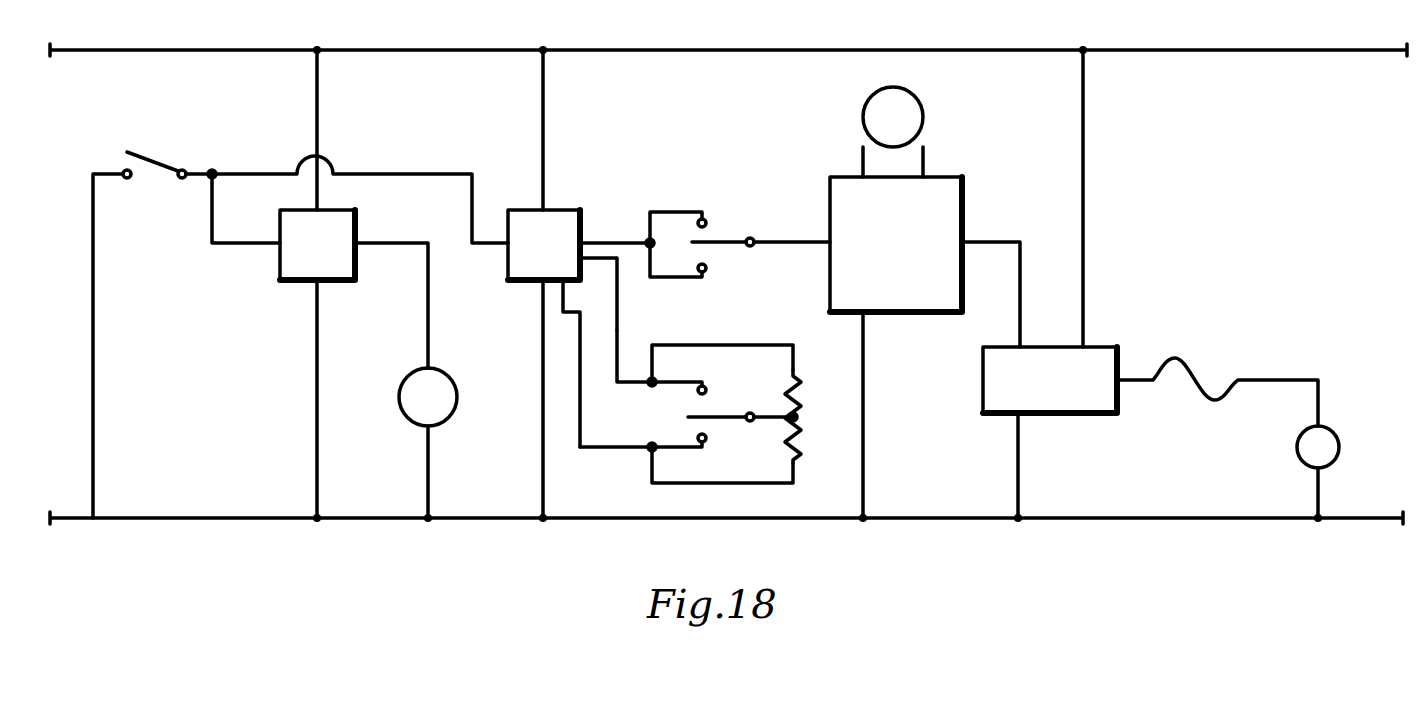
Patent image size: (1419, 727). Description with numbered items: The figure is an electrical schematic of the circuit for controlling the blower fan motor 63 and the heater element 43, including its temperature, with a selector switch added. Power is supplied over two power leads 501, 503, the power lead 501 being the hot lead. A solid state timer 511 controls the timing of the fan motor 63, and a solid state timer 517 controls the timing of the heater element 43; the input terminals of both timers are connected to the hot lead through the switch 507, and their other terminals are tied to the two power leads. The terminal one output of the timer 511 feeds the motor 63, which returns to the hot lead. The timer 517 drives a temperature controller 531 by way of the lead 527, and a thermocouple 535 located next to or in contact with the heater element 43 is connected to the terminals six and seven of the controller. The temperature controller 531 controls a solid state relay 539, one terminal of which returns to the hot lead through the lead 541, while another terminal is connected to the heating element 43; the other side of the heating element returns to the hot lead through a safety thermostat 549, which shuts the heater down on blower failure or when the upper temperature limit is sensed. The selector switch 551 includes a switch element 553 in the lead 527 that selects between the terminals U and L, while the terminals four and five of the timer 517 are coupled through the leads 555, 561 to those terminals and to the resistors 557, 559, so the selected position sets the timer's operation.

The power lead 503 is at (407, 50).
The power lead 501 is at (380, 518).
The switch 507 is at (147, 160).
The solid state timer 511 is at (338, 280).
The motor 63 is at (457, 390).
The solid state timer 517 is at (503, 262).
The lead 527 is at (602, 240).
The selector switch 551 is at (695, 202).
The switch element 553 is at (728, 243).
The lead 555 is at (617, 318).
The resistor 557 is at (785, 390).
The resistor 559 is at (787, 440).
The lead 561 is at (617, 447).
The temperature controller 531 is at (962, 198).
The thermocouple 535 is at (893, 113).
The solid state relay 539 is at (1063, 413).
The lead 541 is at (1017, 463).
The heater element 43 is at (1202, 372).
The safety thermostat 549 is at (1335, 435).